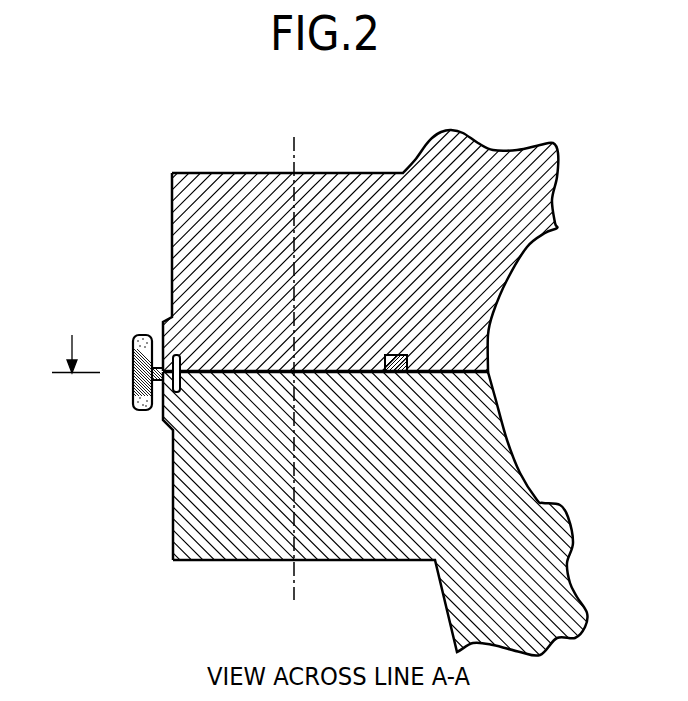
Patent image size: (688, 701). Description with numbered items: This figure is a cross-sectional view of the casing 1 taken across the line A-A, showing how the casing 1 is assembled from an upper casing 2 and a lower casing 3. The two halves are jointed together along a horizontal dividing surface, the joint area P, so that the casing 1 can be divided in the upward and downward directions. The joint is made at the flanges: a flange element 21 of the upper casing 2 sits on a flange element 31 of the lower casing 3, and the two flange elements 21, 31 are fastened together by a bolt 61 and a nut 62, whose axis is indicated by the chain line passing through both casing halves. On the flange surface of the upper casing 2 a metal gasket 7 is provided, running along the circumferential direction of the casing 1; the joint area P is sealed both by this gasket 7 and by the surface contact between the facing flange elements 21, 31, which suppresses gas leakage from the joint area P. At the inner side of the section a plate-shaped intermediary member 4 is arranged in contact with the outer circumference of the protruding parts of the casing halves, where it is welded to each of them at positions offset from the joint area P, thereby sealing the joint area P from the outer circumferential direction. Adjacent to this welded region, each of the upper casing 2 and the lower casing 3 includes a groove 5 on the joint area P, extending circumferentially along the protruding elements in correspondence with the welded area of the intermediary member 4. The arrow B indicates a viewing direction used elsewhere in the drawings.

The casing 1 is at (563, 131).
The upper casing 2 is at (385, 172).
The lower casing 3 is at (393, 562).
The intermediary member 4 is at (135, 386).
The groove 5 is at (178, 392).
The metal gasket 7 is at (387, 355).
The flange element 21 is at (172, 222).
The flange element 31 is at (173, 535).
The bolt 61 is at (336, 340).
The nut 62 is at (294, 153).
The joint area P is at (208, 372).
The view direction B is at (72, 342).